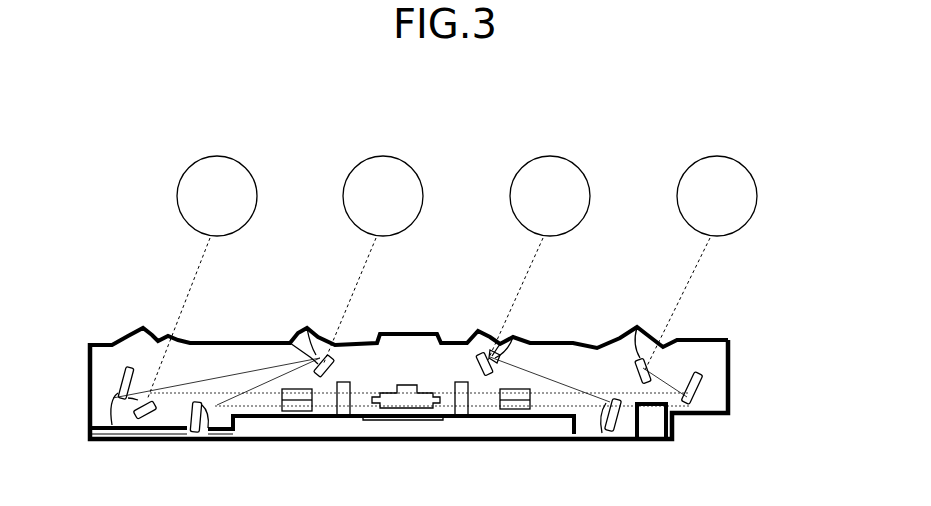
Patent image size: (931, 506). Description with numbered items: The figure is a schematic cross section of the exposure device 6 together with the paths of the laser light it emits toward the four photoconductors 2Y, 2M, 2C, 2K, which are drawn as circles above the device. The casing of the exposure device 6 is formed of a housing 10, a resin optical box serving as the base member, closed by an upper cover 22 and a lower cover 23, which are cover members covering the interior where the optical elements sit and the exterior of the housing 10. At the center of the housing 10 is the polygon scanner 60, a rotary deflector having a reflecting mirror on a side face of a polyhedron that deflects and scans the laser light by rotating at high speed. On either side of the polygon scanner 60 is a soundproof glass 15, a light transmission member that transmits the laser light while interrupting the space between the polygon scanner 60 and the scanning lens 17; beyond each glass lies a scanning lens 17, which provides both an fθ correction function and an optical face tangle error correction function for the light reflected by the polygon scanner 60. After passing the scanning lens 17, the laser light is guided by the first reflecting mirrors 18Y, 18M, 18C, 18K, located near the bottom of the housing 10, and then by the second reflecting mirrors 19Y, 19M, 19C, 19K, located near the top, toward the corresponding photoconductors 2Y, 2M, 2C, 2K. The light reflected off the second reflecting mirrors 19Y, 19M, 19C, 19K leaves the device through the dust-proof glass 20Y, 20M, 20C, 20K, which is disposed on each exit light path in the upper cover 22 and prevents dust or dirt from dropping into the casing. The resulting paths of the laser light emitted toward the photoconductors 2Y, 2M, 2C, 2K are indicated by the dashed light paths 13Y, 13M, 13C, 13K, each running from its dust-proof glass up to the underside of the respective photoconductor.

The photoconductor 2Y is at (232, 157).
The photoconductor 2M is at (399, 157).
The photoconductor 2C is at (567, 157).
The photoconductor 2K is at (734, 157).
The exposure device 6 is at (728, 297).
The housing 10 is at (730, 383).
The light path 13Y is at (198, 263).
The light path 13M is at (357, 263).
The light path 13C is at (523, 263).
The light path 13K is at (690, 258).
The soundproof glass 15 is at (344, 418).
The scanning lens 17 is at (297, 414).
The first reflecting mirror 18Y is at (120, 400).
The first reflecting mirror 18M is at (200, 434).
The first reflecting mirror 18C is at (607, 432).
The first reflecting mirror 18K is at (700, 402).
The second reflecting mirror 19Y is at (145, 420).
The second reflecting mirror 19M is at (302, 340).
The second reflecting mirror 19C is at (512, 345).
The second reflecting mirror 19K is at (640, 358).
The dust-proof glass 20Y is at (165, 333).
The dust-proof glass 20M is at (325, 332).
The dust-proof glass 20C is at (492, 333).
The dust-proof glass 20K is at (656, 330).
The upper cover 22 is at (732, 347).
The lower cover 23 is at (634, 440).
The polygon scanner 60 is at (404, 385).